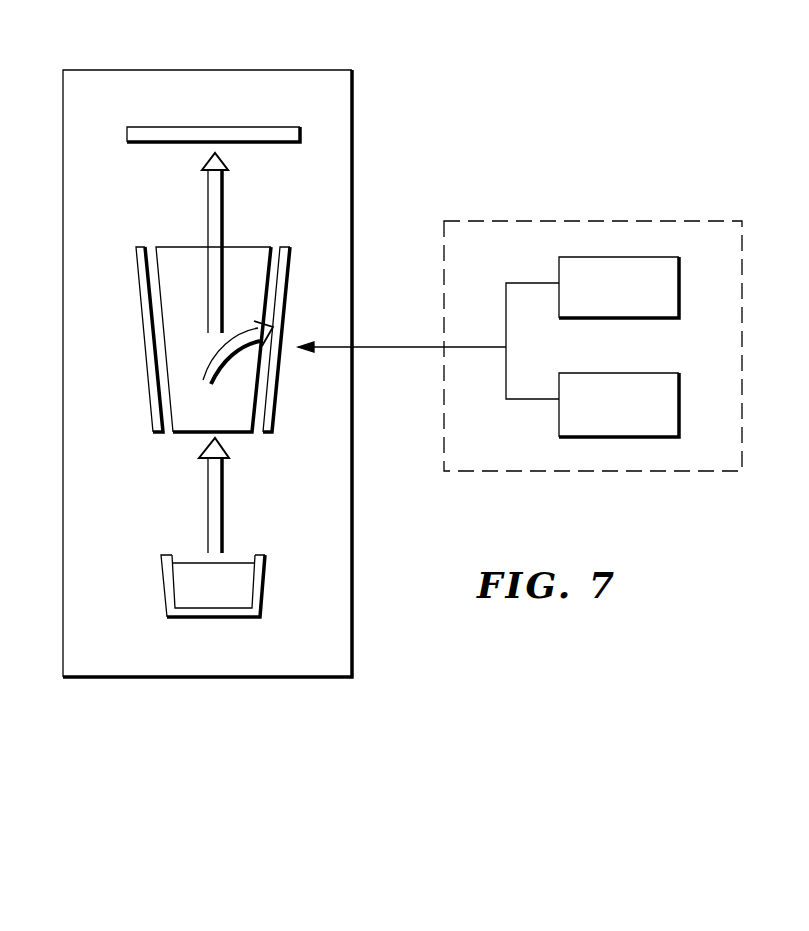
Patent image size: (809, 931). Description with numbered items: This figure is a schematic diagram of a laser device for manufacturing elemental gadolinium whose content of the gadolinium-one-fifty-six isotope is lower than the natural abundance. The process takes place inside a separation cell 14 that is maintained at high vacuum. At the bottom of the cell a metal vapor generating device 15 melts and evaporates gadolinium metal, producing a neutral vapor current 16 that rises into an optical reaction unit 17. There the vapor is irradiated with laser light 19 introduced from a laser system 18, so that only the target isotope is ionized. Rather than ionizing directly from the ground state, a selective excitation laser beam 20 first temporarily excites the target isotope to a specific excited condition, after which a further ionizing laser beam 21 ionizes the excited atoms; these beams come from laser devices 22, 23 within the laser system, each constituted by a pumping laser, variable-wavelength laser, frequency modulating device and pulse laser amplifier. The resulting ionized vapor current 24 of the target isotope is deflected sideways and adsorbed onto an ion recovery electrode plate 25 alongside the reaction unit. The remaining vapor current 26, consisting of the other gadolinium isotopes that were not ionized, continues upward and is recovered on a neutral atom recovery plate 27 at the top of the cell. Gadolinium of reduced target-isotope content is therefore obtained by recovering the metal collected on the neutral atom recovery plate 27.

The separation cell 14 is at (322, 70).
The metal vapor generating device 15 is at (162, 581).
The neutral vapor current 16 is at (207, 490).
The optical reaction unit 17 is at (243, 420).
The laser system 18 is at (632, 221).
The laser light 19 is at (378, 347).
The selective excitation laser beam 20 is at (524, 283).
The ionizing laser beam 21 is at (524, 399).
The laser device 22 is at (679, 278).
The laser device 23 is at (657, 427).
The ionized Gd-156 vapor current 24 is at (233, 350).
The ion recovery electrode plate 25 is at (287, 247).
The vapor current 26 is at (207, 188).
The neutral atom recovery plate 27 is at (158, 127).